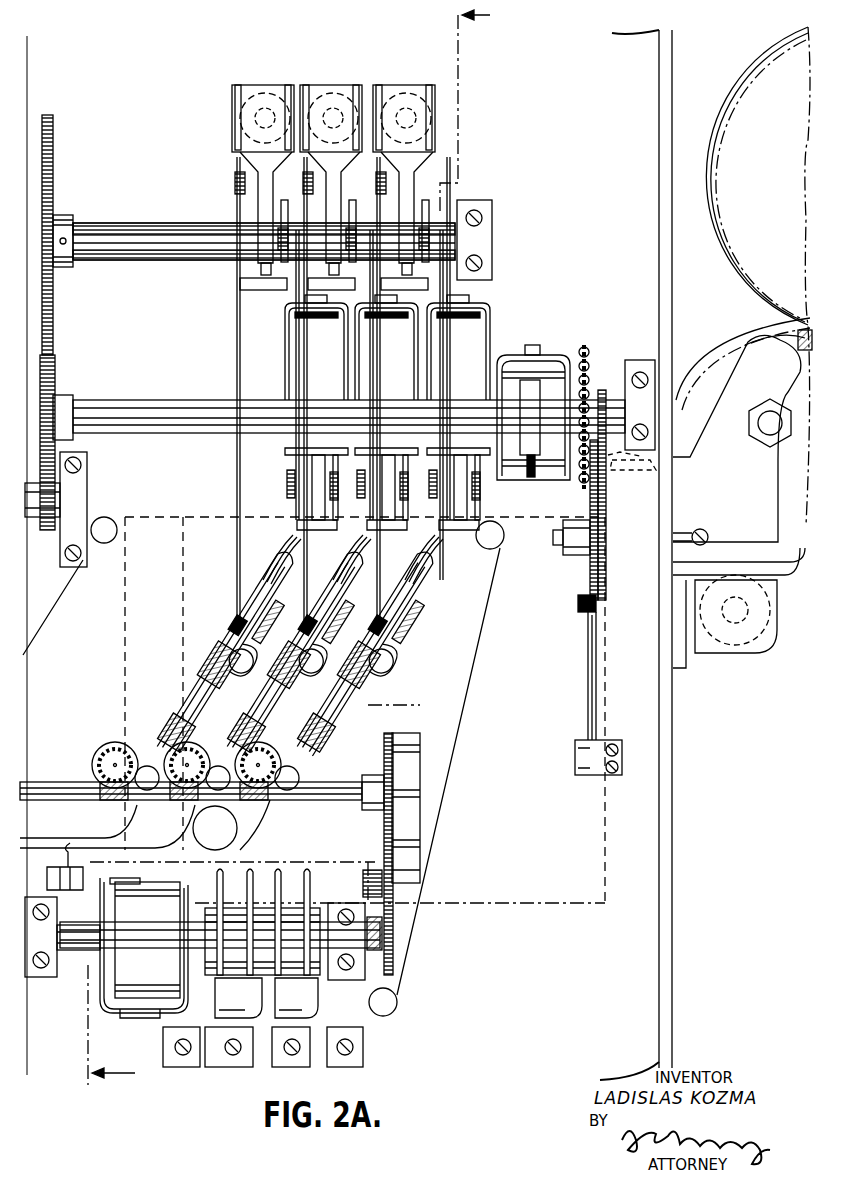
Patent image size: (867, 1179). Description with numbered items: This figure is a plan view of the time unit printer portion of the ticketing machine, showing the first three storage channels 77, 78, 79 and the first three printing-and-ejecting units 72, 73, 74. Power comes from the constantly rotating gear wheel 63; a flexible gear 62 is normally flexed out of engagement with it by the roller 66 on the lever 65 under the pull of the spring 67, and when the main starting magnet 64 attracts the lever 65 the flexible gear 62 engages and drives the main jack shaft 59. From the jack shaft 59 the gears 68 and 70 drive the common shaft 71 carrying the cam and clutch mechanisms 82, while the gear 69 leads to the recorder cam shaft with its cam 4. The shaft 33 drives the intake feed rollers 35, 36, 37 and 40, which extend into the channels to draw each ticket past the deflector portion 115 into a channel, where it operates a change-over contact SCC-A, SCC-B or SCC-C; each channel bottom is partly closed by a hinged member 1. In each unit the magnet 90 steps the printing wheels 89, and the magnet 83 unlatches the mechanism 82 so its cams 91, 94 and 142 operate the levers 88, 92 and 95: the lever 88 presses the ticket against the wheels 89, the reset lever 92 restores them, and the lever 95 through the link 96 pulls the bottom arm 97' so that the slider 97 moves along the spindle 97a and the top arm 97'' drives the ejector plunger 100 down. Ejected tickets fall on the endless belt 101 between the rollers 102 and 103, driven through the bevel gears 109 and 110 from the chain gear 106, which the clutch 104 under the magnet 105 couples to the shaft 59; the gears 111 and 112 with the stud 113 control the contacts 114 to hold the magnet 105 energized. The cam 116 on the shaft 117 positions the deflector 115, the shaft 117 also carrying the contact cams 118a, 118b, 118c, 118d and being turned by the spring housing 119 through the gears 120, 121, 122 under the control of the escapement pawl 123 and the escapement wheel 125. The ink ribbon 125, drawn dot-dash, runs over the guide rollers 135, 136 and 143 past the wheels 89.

The hinged member 1 is at (322, 718).
The cam 4 is at (277, 549).
The shaft 33 is at (322, 782).
The intake feed roller 35 is at (105, 745).
The intake feed roller 36 is at (180, 730).
The intake feed roller 37 is at (275, 745).
The intake feed roller 40 is at (217, 825).
The main jack shaft 59 is at (105, 403).
The flexible gear 62 is at (712, 330).
The rotating gear wheel 63 is at (770, 65).
The main starting magnet 64 is at (760, 640).
The lever 65 is at (745, 377).
The roller 66 is at (760, 334).
The spring 67 is at (708, 534).
The gear 68 is at (55, 372).
The gear 69 is at (55, 535).
The gear 70 is at (55, 326).
The common shaft 71 is at (87, 265).
The printing-and-ejecting unit 72 is at (170, 127).
The printing-and-ejecting unit 73 is at (335, 58).
The printing-and-ejecting unit 74 is at (528, 166).
The storage channel 77 is at (165, 740).
The storage channel 78 is at (237, 705).
The storage channel 79 is at (296, 719).
The cam and clutch mechanism 82 is at (467, 183).
The magnet 83 is at (268, 92).
The lever 88 is at (292, 515).
The printing wheels 89 is at (490, 502).
The magnet 90 is at (476, 333).
The cam 91 is at (470, 280).
The reset lever 92 is at (296, 384).
The cam 94 is at (440, 182).
The lever 95 is at (238, 372).
The link 96 is at (327, 631).
The slider 97 is at (312, 679).
The bottom arm 97' is at (423, 633).
The spindle 97a is at (395, 660).
The top arm 97'' is at (300, 658).
The ejector plunger 100 is at (312, 645).
The endless belt 101 is at (523, 905).
The roller 102 is at (613, 905).
The roller 103 is at (130, 662).
The start-stop type clutch 104 is at (537, 385).
The clutch magnet 105 is at (507, 447).
The chain gear 106 is at (590, 345).
The bevel gear 109 is at (675, 425).
The bevel gear 110 is at (660, 462).
The gear 111 is at (603, 398).
The gear 112 is at (600, 570).
The stud 113 is at (600, 612).
The contacts 114 is at (586, 665).
The deflector portion 115 is at (30, 835).
The cam 116 is at (58, 985).
The shaft 117 is at (187, 1000).
The contact cam 118a is at (236, 870).
The contact cam 118b is at (262, 872).
The contact cam 118c is at (285, 875).
The contact cam 118d is at (310, 880).
The spring housing 119 is at (410, 733).
The gear 120 is at (390, 732).
The gear 121 is at (385, 878).
The gear 122 is at (380, 975).
The escapement pawl 123 is at (108, 905).
The escapement wheel / ink ribbon 125 is at (50, 588).
The guide roller 135 is at (118, 535).
The guide roller 136 is at (500, 549).
The cam 142 is at (336, 293).
The guide roller 143 is at (398, 1004).
The change-over contact SCC-A is at (215, 612).
The change-over contact SCC-B is at (300, 615).
The change-over contact SCC-C is at (370, 618).